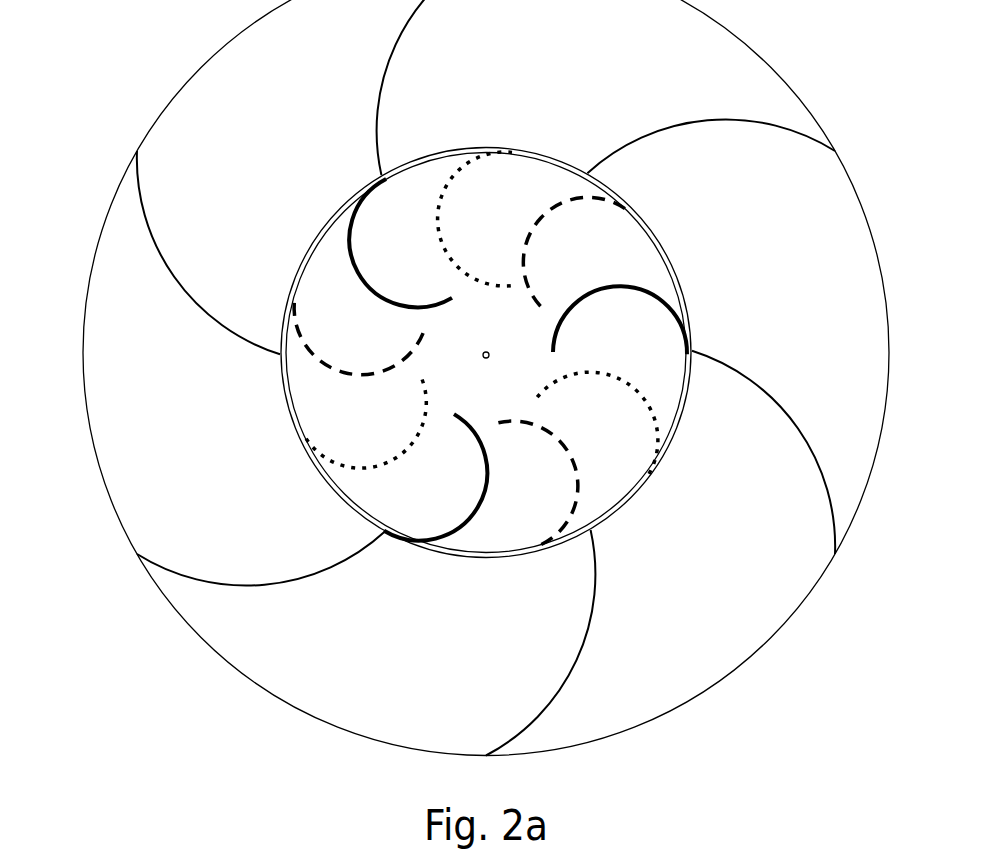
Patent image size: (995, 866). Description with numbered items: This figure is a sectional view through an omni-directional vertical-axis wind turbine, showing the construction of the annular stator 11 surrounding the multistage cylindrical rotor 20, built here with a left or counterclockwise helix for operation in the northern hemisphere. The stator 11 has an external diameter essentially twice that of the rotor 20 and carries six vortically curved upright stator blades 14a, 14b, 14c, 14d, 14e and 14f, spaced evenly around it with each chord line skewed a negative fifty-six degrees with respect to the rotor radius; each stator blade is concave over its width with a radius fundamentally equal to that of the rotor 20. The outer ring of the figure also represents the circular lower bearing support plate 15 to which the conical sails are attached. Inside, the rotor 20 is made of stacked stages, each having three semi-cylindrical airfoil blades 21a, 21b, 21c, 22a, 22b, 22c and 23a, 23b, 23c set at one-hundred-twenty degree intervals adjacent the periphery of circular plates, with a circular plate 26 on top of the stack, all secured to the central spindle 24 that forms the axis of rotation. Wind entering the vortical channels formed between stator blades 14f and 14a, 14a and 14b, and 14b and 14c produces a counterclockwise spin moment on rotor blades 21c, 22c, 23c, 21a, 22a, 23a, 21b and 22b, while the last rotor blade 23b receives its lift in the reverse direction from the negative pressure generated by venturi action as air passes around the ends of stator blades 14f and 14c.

The annular stator 11 is at (70, 332).
The stator blade 14a is at (590, 627).
The stator blade 14b is at (788, 415).
The stator blade 14c is at (688, 122).
The stator blade 14d is at (379, 96).
The stator blade 14e is at (208, 319).
The stator blade 14f is at (311, 580).
The lower bearing support plate 15 is at (287, 401).
The rotor 20 is at (491, 168).
The airfoil blade 21a is at (623, 382).
The airfoil blade 21b is at (446, 260).
The airfoil blade 21c is at (402, 453).
The airfoil blade 22a is at (608, 285).
The airfoil blade 22b is at (364, 285).
The airfoil blade 22c is at (487, 485).
The airfoil blade 23a is at (531, 229).
The airfoil blade 23b is at (358, 378).
The airfoil blade 23c is at (580, 477).
The central spindle 24 is at (486, 358).
The circular plate 26 is at (616, 510).